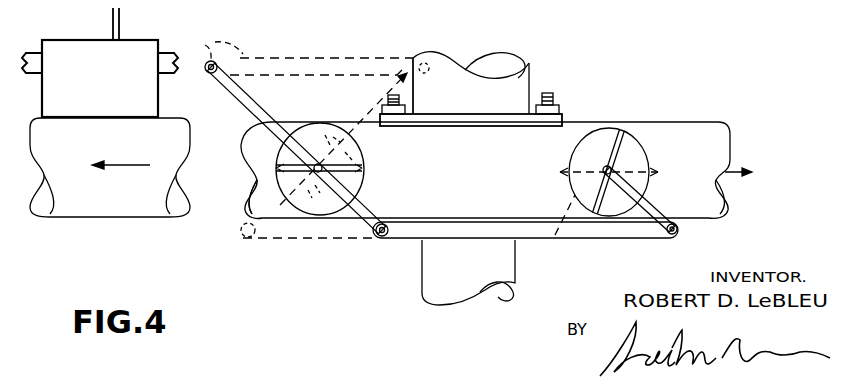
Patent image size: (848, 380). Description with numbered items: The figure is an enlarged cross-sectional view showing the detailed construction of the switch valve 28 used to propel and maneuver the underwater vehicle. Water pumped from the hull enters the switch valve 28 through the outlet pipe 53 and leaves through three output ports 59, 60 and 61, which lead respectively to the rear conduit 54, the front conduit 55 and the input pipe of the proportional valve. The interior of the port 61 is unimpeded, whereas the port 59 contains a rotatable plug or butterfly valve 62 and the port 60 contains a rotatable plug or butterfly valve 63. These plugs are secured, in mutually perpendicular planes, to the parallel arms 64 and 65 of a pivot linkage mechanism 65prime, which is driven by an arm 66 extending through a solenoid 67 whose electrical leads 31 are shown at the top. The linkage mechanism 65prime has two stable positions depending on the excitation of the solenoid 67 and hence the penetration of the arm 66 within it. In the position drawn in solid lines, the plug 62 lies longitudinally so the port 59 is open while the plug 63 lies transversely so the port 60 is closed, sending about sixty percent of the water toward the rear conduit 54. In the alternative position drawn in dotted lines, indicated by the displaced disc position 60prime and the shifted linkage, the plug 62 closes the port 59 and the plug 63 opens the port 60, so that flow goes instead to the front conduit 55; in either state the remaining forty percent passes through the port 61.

The switch valve 28 is at (592, 96).
The electrical leads 31 is at (121, 26).
The outlet pipe 53 is at (530, 64).
The rear conduit 54 is at (768, 173).
The front conduit 55 is at (110, 167).
The output port 59 is at (692, 130).
The output port 60 is at (302, 121).
The alternate position of valve disc 60prime is at (250, 195).
The output port 61 is at (505, 296).
The butterfly valve 62 is at (588, 140).
The butterfly valve 63 is at (338, 138).
The arm 64 is at (654, 208).
The arm 65 is at (366, 208).
The pivot linkage mechanism 65prime is at (409, 244).
The arm 66 is at (211, 60).
The solenoid 67 is at (86, 38).